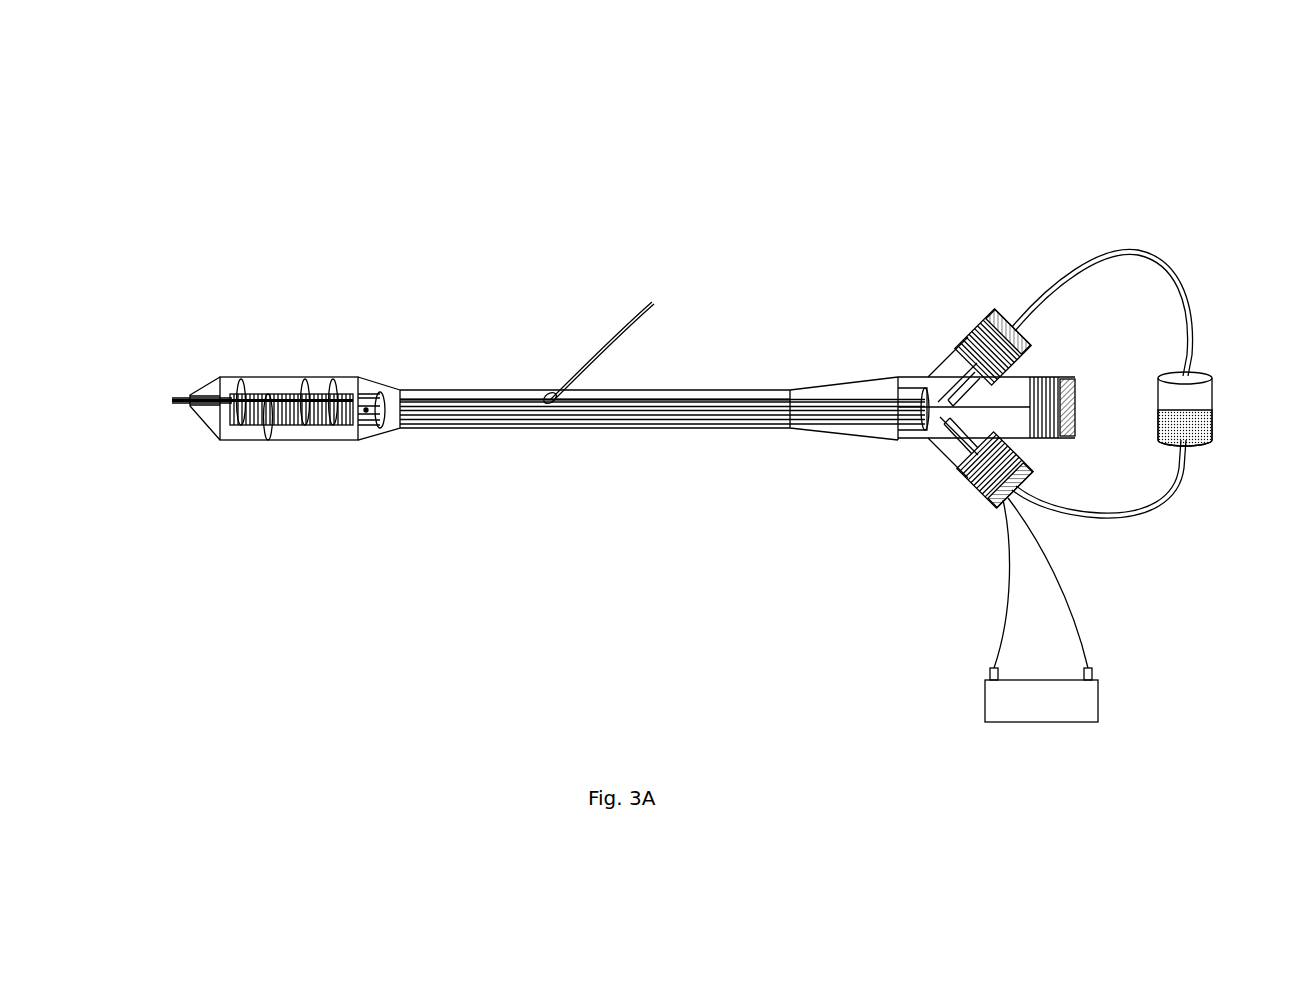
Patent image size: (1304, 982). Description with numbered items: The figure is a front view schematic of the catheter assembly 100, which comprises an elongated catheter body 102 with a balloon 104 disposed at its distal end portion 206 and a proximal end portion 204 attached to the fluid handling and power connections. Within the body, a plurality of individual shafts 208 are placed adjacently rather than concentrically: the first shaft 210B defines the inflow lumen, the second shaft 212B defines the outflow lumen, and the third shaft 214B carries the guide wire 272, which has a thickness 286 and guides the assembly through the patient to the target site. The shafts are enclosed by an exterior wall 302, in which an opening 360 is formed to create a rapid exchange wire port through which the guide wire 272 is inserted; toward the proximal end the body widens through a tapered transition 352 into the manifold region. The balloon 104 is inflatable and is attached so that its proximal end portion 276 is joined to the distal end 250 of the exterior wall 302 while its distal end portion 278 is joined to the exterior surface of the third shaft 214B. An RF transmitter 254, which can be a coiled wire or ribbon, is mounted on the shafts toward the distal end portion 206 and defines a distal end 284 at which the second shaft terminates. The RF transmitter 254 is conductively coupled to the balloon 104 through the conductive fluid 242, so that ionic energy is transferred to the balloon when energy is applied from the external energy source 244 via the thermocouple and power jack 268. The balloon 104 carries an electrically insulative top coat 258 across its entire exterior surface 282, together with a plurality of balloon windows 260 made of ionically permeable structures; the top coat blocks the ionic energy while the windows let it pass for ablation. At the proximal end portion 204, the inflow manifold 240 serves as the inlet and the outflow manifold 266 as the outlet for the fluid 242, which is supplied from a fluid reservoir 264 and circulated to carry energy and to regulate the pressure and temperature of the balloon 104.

The catheter assembly 100 is at (128, 132).
The elongated catheter body 102 is at (625, 430).
The balloon 104 is at (250, 440).
The proximal end portion 204 is at (935, 380).
The distal end portion 206 is at (200, 380).
The plurality of individual shafts 208 is at (728, 382).
The first shaft 210B is at (738, 410).
The second shaft 212B is at (480, 403).
The third shaft 214B is at (688, 400).
The inflow manifold 240 is at (975, 318).
The fluid 242 is at (1215, 445).
The external energy source 244 is at (985, 697).
The distal end of exterior wall 250 is at (394, 436).
The RF transmitter 254 is at (286, 378).
The electrically insulative top coat 258 is at (250, 378).
The plurality of balloon windows 260 is at (332, 378).
The fluid reservoir 264 is at (1212, 422).
The outflow manifold 266 is at (1025, 488).
The thermocouple and power jack 268 is at (1058, 377).
The guide wire 272 is at (634, 322).
The proximal end portion of balloon 276 is at (378, 380).
The distal end portion of balloon 278 is at (205, 420).
The exterior surface of balloon 282 is at (305, 442).
The distal end of RF transmitter 284 is at (188, 407).
The thickness of guide wire 286 is at (637, 358).
The exterior wall 302 is at (448, 389).
The strain relief taper 352 is at (855, 436).
The opening 360 is at (548, 392).